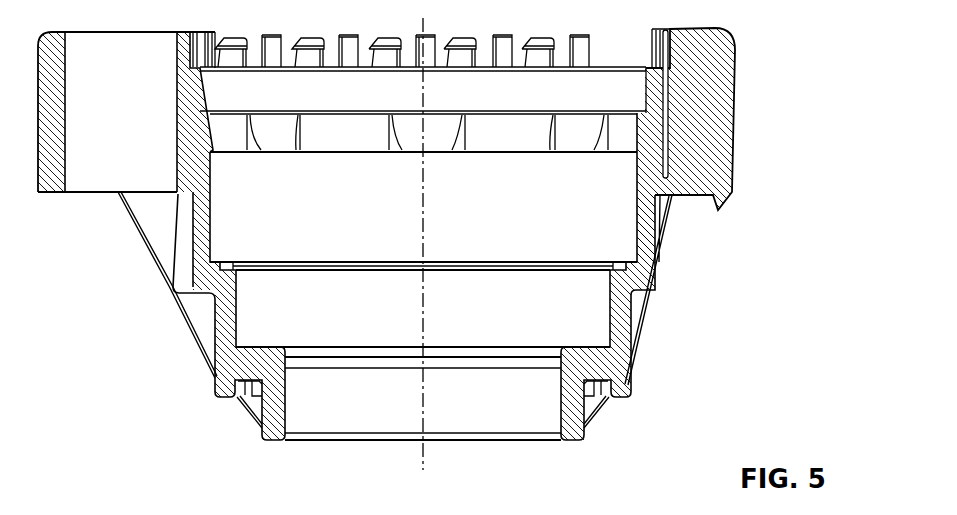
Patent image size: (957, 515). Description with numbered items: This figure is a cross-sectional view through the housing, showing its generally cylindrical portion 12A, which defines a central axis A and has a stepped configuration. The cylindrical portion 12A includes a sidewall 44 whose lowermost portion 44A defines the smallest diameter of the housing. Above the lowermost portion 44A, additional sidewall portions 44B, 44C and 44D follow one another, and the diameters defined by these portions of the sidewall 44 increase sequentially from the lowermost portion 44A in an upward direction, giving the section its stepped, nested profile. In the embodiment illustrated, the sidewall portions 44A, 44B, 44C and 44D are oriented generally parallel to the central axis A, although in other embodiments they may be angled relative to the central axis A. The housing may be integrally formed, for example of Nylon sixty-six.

The cylindrical portion 12A is at (664, 281).
The sidewall 44 is at (656, 252).
The lowermost portion 44A is at (578, 425).
The sidewall portion 44B is at (622, 316).
The sidewall portion 44C is at (650, 225).
The sidewall portion 44D is at (650, 92).
The central axis A is at (425, 455).